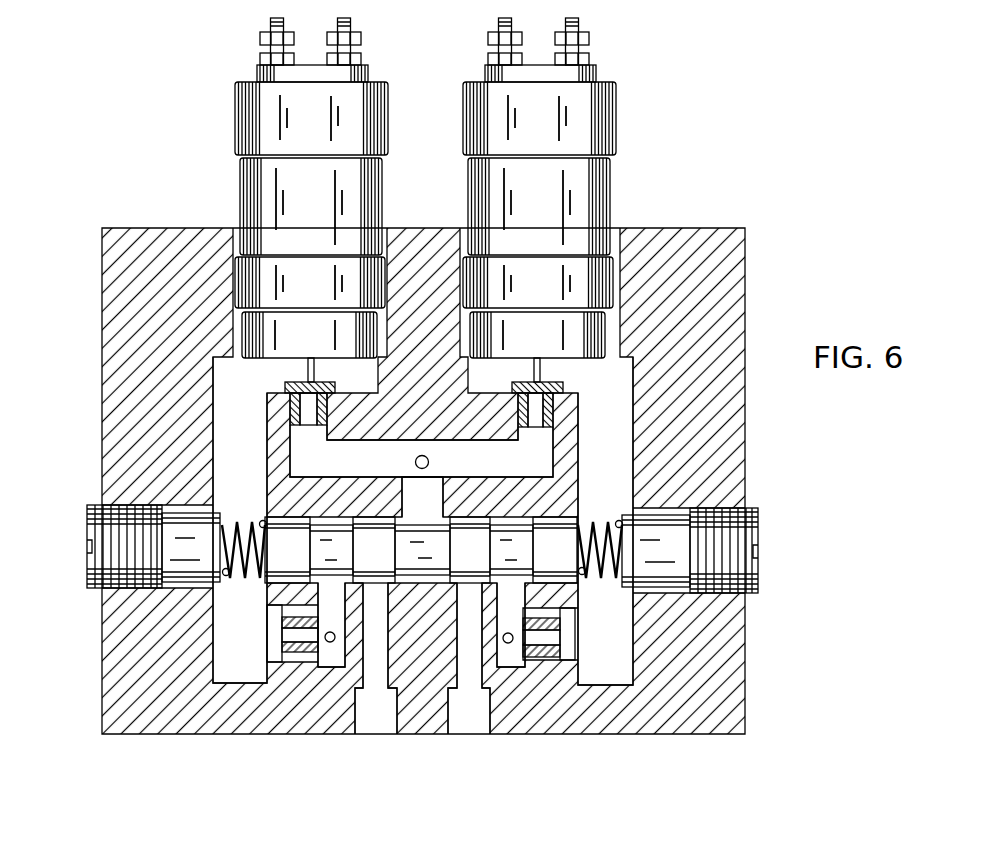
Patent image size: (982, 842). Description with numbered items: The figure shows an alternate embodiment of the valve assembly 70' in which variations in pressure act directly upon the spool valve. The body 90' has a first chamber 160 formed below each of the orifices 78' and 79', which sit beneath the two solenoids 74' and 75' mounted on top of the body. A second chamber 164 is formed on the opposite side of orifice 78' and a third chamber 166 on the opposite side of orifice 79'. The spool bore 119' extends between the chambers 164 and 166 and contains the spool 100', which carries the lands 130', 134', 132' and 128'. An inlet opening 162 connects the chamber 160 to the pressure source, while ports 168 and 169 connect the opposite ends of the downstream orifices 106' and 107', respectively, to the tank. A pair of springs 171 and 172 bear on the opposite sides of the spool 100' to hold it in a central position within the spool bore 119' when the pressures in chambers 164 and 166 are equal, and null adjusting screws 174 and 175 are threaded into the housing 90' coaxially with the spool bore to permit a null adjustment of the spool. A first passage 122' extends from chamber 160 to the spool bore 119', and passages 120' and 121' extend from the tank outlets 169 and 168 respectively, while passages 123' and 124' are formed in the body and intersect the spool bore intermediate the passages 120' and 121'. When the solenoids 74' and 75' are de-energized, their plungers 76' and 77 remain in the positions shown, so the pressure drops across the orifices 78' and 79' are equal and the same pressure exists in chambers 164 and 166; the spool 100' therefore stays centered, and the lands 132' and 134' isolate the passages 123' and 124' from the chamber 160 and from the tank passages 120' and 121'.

The valve assembly 70' is at (392, 455).
The body 90' is at (392, 481).
The solenoid 74' is at (340, 188).
The solenoid 75' is at (596, 188).
The plunger 76' is at (267, 374).
The plunger 77 is at (541, 371).
The orifice 78' is at (310, 423).
The orifice 79' is at (537, 426).
The first chamber 160 is at (379, 470).
The inlet opening 162 is at (429, 461).
The second chamber 164 is at (252, 432).
The third chamber 166 is at (622, 438).
The first passage 122' is at (453, 497).
The spool 100' is at (423, 657).
The land 130' is at (289, 550).
The land 134' is at (378, 550).
The land 132' is at (475, 550).
The land 128' is at (557, 550).
The spool bore 119' is at (414, 646).
The spring 171 is at (244, 583).
The spring 172 is at (605, 582).
The null adjusting screw 174 is at (90, 586).
The null adjusting screw 175 is at (760, 508).
The downstream orifice 106' is at (223, 705).
The downstream orifice 107' is at (575, 698).
The port 168 is at (330, 643).
The port 169 is at (509, 645).
The passage 121' is at (296, 700).
The passage 120' is at (501, 690).
The passage 124' is at (365, 695).
The passage 123' is at (466, 677).